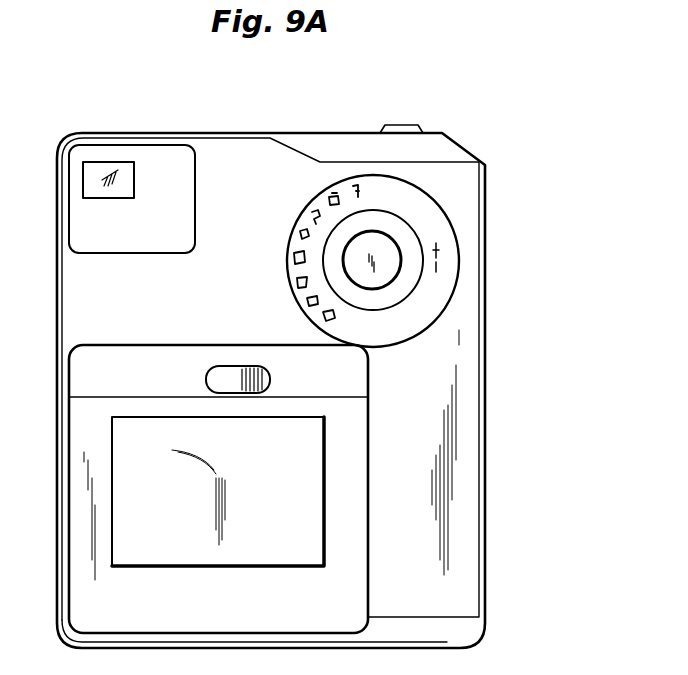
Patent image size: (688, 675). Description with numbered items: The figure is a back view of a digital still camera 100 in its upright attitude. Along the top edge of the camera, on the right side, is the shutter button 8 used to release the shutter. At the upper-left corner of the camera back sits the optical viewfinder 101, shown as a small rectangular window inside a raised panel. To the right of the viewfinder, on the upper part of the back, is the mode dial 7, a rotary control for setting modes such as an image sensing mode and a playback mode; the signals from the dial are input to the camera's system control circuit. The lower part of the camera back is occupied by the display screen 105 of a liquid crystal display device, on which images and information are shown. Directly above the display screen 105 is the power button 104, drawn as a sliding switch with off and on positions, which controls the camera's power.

The digital still camera 100 is at (512, 148).
The shutter-release button 8 is at (400, 124).
The optical viewfinder 101 is at (98, 170).
The mode dial 7 is at (430, 212).
The power button 104 is at (218, 367).
The display screen 105 is at (312, 520).